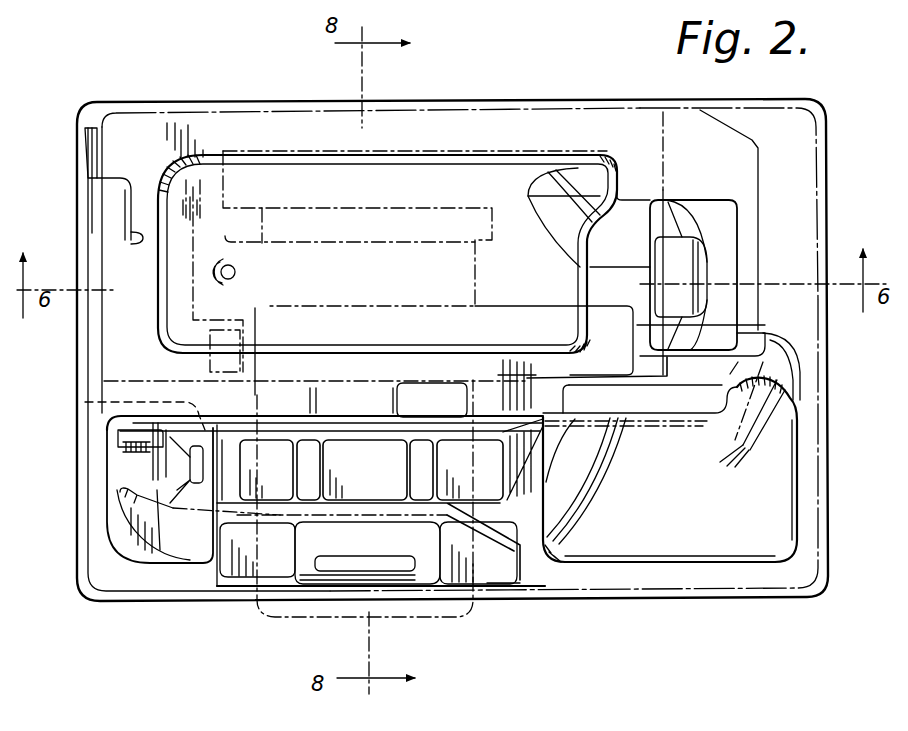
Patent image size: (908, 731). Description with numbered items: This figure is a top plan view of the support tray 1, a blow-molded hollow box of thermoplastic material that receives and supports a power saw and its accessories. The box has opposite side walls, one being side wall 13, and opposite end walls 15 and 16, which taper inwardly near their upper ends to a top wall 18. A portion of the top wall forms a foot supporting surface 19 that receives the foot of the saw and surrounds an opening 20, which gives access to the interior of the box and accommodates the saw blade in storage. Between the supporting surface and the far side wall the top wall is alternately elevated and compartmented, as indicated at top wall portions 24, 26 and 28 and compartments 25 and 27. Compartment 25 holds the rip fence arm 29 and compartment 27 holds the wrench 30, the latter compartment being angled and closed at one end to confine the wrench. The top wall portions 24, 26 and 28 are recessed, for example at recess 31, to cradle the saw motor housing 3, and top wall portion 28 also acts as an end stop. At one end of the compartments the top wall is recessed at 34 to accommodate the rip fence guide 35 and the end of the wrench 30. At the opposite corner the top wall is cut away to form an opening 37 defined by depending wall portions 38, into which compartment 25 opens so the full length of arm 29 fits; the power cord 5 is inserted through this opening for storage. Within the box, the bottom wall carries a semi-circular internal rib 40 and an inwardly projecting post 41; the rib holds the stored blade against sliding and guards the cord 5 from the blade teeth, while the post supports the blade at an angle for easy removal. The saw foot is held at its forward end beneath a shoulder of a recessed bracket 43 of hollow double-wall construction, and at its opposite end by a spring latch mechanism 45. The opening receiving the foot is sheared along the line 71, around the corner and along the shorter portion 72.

The support tray 1 is at (80, 601).
The drive motor and housing 3 is at (420, 619).
The power cord 5 is at (730, 436).
The side wall 13 is at (517, 103).
The end wall 15 is at (76, 357).
The end wall 16 is at (829, 403).
The top wall 18 is at (796, 138).
The foot supporting surface 19 is at (133, 130).
The opening 20 is at (253, 180).
The top wall portion 24 is at (190, 424).
The rip fence compartment 25 is at (365, 430).
The top wall portion 26 is at (270, 460).
The wrench compartment 27 is at (245, 520).
The top wall portion 28 is at (383, 559).
The rip fence arm 29 is at (85, 402).
The wrench 30 is at (487, 583).
The recess 31 is at (350, 397).
The recess 34 is at (133, 484).
The rip fence guide 35 is at (197, 470).
The opening 37 is at (717, 527).
The depending wall portions 38 is at (793, 493).
The semi-circular internal rib 40 is at (580, 469).
The post 41 is at (240, 283).
The recessed bracket 43 is at (119, 206).
The spring latch mechanism 45 is at (714, 244).
The line 71 is at (132, 238).
The shorter portion 72 is at (113, 172).